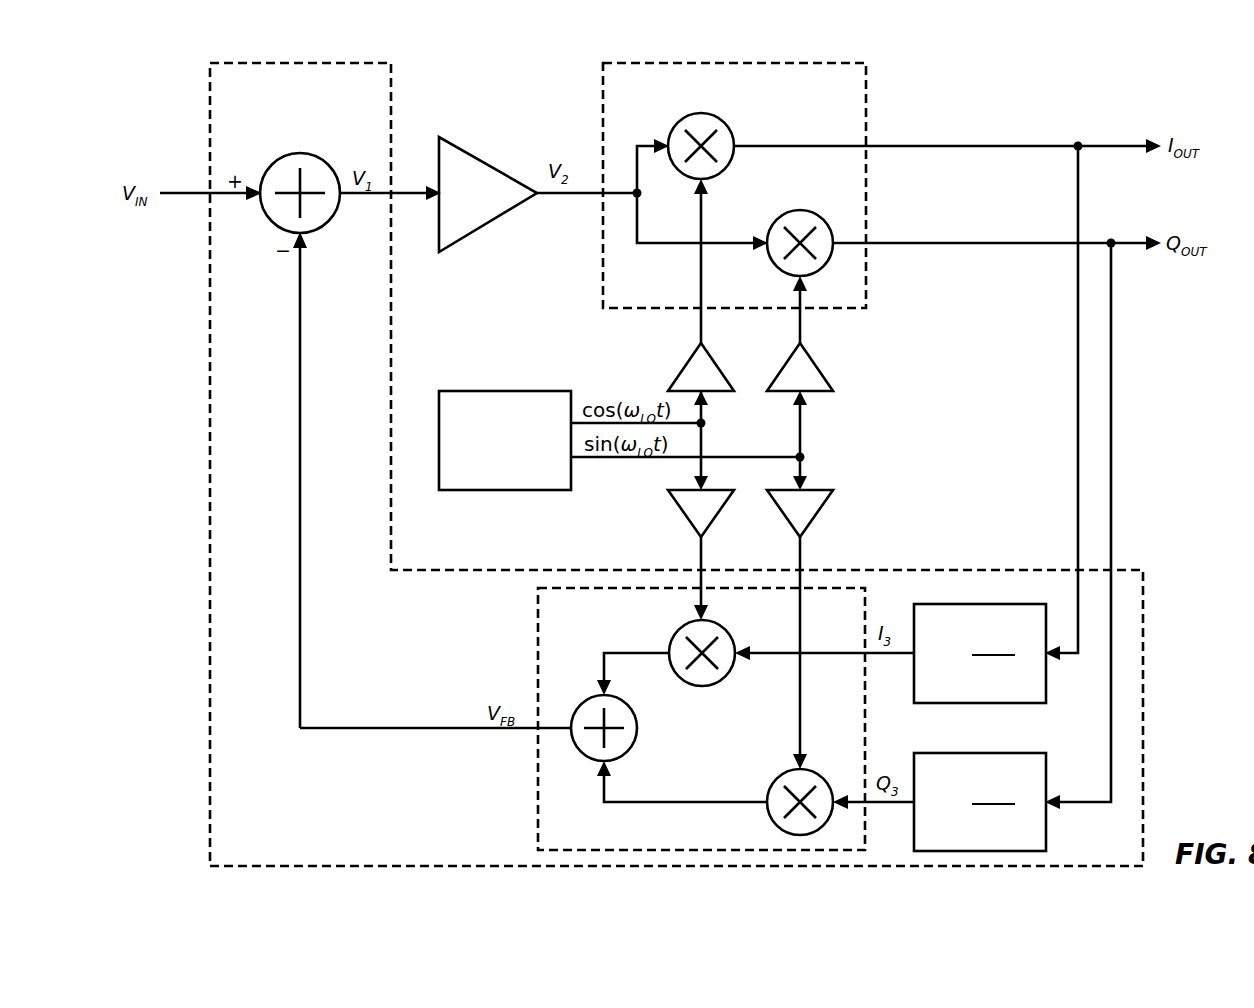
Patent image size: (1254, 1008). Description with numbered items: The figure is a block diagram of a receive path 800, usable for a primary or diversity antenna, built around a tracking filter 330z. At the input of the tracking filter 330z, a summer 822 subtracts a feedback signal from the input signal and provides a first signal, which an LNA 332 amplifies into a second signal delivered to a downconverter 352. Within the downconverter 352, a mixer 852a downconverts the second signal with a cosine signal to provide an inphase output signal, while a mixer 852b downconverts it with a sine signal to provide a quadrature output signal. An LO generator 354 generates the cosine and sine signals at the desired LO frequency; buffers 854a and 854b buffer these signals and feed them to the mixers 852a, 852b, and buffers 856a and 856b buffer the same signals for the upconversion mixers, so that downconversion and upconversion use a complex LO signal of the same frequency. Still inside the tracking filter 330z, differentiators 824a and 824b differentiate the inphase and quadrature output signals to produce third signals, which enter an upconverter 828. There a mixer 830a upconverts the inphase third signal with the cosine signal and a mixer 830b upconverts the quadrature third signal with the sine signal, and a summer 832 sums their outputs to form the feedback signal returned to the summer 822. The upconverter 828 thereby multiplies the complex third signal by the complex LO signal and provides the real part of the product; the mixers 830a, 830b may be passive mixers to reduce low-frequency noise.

The receive path 800 is at (1200, 62).
The tracking filter 330z is at (310, 52).
The downconverter 352 is at (722, 63).
The summer 822 is at (295, 153).
The LNA 332 is at (485, 154).
The mixer 852a is at (724, 170).
The mixer 852b is at (795, 211).
The LO generator 354 is at (502, 391).
The buffer 854a is at (728, 364).
The buffer 854b is at (827, 364).
The buffer 856a is at (712, 520).
The buffer 856b is at (811, 520).
The upconverter 828 is at (538, 637).
The mixer 830a is at (694, 684).
The mixer 830b is at (780, 777).
The summer 832 is at (578, 703).
The differentiator 824a is at (956, 604).
The differentiator 824b is at (956, 753).